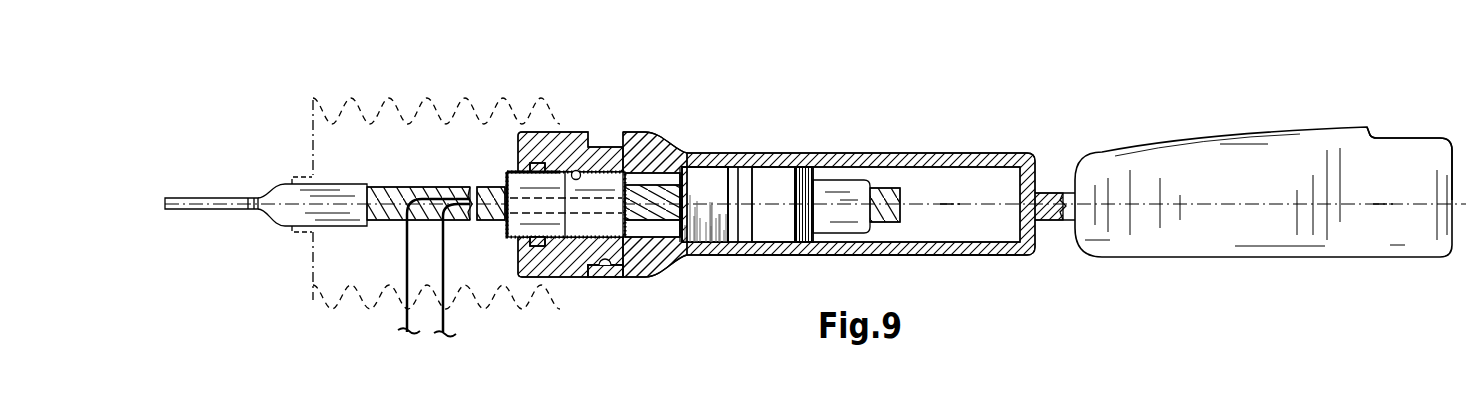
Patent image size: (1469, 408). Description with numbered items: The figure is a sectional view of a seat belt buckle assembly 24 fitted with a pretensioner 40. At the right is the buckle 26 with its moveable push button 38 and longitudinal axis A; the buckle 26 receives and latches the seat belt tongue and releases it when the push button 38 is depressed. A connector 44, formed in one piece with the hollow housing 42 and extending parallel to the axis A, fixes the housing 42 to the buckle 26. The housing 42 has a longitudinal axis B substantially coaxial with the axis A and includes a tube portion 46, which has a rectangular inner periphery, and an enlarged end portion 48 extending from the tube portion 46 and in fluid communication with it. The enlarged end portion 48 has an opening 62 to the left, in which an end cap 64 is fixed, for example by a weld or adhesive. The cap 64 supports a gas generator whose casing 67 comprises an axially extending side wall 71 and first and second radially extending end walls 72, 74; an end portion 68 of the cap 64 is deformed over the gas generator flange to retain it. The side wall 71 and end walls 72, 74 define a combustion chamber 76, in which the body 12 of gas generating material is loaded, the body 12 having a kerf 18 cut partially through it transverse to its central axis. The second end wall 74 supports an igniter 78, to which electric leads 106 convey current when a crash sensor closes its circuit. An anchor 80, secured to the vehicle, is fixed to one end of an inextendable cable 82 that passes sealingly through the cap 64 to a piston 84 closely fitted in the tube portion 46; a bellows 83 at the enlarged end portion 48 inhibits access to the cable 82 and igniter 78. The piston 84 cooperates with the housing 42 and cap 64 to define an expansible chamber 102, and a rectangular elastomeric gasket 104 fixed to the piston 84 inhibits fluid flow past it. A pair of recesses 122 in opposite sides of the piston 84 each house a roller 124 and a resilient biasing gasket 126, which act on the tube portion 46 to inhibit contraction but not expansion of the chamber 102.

The body of gas generating material 12 is at (522, 222).
The kerf 18 is at (566, 222).
The buckle assembly 24 is at (1084, 88).
The buckle 26 is at (1153, 130).
The push button 38 is at (1400, 134).
The pretensioner 40 is at (960, 126).
The housing 42 is at (688, 268).
The connector 44 is at (1053, 192).
The tube portion 46 is at (878, 254).
The enlarged end portion 48 is at (640, 272).
The opening 62 is at (621, 278).
The end cap 64 is at (563, 288).
The casing 67 is at (549, 172).
The end portion of cap 68 is at (537, 172).
The side wall 71 is at (598, 172).
The first end wall 72 is at (507, 231).
The second end wall 74 is at (633, 163).
The combustion chamber 76 is at (576, 170).
The igniter 78 is at (503, 184).
The anchor 80 is at (207, 200).
The cable 82 is at (460, 187).
The bellows 83 is at (333, 99).
The piston 84 is at (800, 233).
The expansible chamber 102 is at (659, 210).
The gasket 104 is at (668, 186).
The electric leads 106 is at (407, 240).
The recesses 122 is at (806, 175).
The roller 124 is at (780, 183).
The biasing gasket 126 is at (743, 190).
The longitudinal axis of buckle A is at (1383, 208).
The longitudinal axis of housing B is at (950, 208).